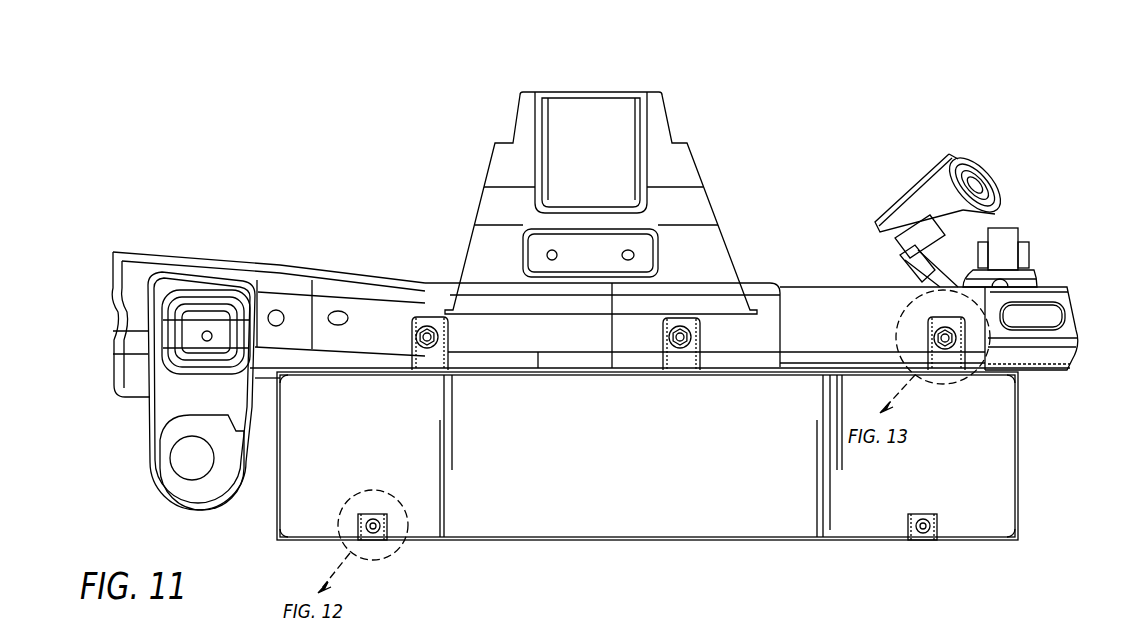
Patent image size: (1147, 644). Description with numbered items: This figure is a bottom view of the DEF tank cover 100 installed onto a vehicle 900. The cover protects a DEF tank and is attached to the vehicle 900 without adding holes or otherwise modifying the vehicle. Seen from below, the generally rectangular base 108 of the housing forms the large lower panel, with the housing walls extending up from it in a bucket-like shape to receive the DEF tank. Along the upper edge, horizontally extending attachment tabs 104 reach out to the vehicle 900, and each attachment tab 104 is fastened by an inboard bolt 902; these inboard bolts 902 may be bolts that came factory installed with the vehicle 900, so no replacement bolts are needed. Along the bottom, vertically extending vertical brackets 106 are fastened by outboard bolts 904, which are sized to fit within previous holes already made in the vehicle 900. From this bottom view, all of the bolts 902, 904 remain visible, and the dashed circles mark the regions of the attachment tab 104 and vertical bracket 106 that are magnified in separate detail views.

The DEF tank cover 100 is at (1040, 542).
The attachment tab 104 is at (400, 284).
The vertical bracket 106 is at (388, 527).
The base 108 is at (550, 532).
The vehicle 900 is at (752, 148).
The inboard bolt 902 is at (427, 318).
The outboard bolt 904 is at (372, 534).